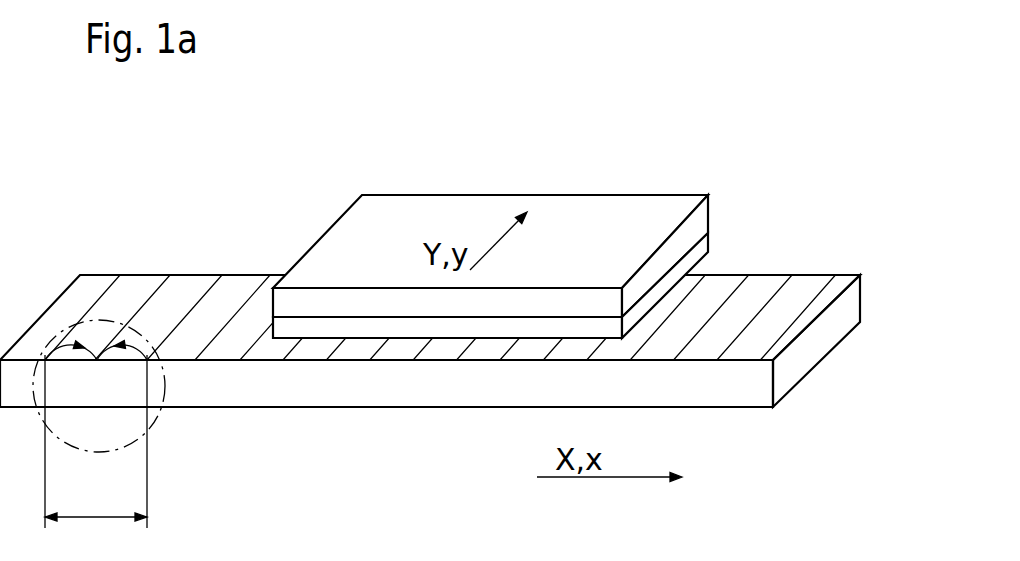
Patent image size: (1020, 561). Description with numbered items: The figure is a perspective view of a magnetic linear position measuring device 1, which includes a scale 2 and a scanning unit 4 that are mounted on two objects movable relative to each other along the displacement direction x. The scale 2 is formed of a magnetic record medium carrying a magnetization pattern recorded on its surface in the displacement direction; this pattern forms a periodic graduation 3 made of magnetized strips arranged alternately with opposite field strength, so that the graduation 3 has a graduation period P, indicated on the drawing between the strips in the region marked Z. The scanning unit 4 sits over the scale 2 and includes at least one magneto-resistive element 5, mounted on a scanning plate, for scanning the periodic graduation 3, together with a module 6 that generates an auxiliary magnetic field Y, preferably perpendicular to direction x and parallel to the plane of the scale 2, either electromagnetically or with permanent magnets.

The position measuring device 1 is at (430, 292).
The scale 2 is at (738, 390).
The periodic graduation 3 is at (773, 305).
The scanning unit 4 is at (518, 230).
The magneto-resistive element 5 is at (702, 245).
The module 6 is at (567, 205).
The magnetization zone Z is at (153, 417).
The graduation period P is at (96, 441).